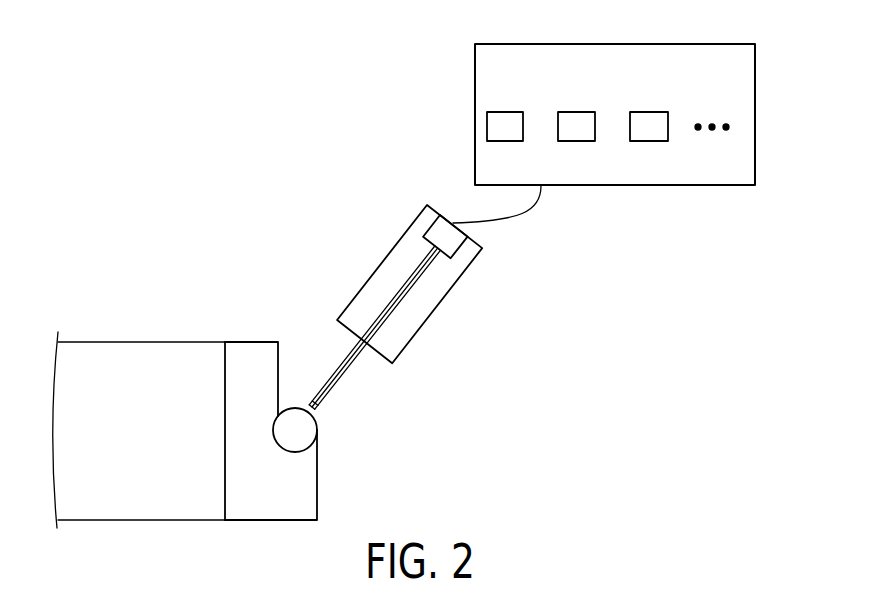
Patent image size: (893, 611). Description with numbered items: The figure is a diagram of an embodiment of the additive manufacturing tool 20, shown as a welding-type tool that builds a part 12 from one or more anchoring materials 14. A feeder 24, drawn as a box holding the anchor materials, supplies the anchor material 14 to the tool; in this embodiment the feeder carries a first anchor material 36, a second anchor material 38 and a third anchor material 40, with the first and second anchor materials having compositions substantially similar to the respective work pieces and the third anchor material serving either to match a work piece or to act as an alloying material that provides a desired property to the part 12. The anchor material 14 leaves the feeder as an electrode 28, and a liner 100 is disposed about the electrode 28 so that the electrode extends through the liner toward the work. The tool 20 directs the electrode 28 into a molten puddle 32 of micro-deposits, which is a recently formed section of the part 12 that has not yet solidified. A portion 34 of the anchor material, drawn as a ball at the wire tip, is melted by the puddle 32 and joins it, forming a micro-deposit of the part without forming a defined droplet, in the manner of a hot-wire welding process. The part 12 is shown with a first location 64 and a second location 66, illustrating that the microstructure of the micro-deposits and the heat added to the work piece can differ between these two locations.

The part 12 is at (258, 530).
The anchoring material 14 is at (677, 107).
The additive manufacturing tool 20 is at (332, 192).
The feeder 24 is at (616, 44).
The electrode 28 is at (345, 357).
The molten puddle 32 is at (298, 445).
The portion of the anchor material 34 is at (311, 405).
The first anchor material 36 is at (500, 112).
The second anchor material 38 is at (577, 112).
The third anchor material 40 is at (649, 112).
The first location 64 is at (248, 347).
The second location 66 is at (330, 437).
The liner 100 is at (345, 374).